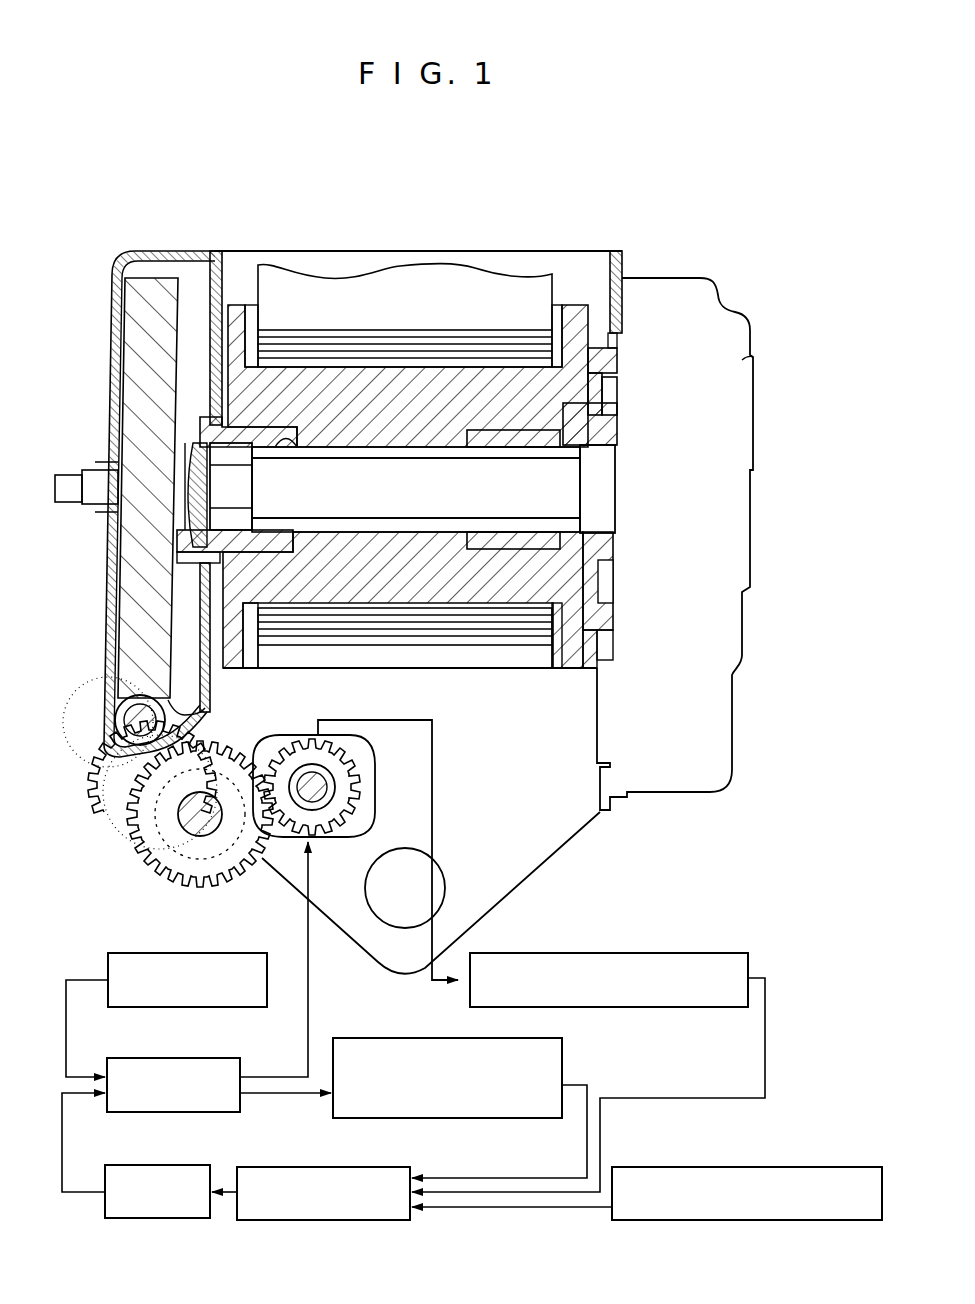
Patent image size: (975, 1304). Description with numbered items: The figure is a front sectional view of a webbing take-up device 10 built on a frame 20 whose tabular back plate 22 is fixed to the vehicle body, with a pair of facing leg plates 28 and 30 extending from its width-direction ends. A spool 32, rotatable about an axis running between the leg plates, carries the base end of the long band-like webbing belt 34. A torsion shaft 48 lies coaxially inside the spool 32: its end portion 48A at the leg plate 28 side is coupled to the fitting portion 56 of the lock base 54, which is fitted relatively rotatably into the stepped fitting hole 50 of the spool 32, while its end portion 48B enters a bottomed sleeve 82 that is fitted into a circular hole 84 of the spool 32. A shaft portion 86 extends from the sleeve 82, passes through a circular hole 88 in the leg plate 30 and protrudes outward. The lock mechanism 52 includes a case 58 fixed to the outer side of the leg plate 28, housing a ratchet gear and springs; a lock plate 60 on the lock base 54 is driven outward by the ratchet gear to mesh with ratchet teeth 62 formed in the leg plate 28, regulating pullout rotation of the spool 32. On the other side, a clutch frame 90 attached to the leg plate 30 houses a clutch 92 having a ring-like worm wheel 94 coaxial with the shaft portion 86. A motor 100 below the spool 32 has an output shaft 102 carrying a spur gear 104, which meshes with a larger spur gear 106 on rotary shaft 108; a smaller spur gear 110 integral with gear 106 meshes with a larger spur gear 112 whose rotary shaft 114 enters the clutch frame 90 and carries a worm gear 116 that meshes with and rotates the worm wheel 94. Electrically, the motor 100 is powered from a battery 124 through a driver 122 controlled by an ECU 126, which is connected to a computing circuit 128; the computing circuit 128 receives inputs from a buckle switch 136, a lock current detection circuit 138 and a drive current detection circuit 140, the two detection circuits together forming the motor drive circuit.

The webbing take-up device 10 is at (545, 244).
The frame 20 is at (576, 838).
The back plate 22 is at (525, 868).
The leg plate 28 is at (622, 262).
The leg plate 30 is at (224, 258).
The spool 32 is at (440, 660).
The webbing belt 34 is at (398, 282).
The torsion shaft 48 is at (378, 506).
The end portion of the torsion shaft 48A is at (612, 485).
The end portion of the torsion shaft 48B is at (248, 490).
The fitting hole 50 is at (500, 432).
The lock mechanism 52 is at (736, 303).
The lock base 54 is at (620, 420).
The fitting portion 56 is at (472, 545).
The case 58 is at (745, 358).
The lock plate 60 is at (625, 402).
The ratchet teeth 62 is at (622, 365).
The sleeve 82 is at (262, 430).
The circular hole 84 is at (325, 440).
The shaft portion 86 is at (98, 462).
The circular hole 88 is at (238, 548).
The clutch frame 90 is at (155, 254).
The clutch 92 is at (126, 266).
The worm wheel 94 is at (132, 350).
The motor 100 is at (293, 735).
The output shaft 102 is at (350, 785).
The spur gear 104 is at (360, 800).
The spur gear 106 is at (162, 870).
The rotary shaft 108 is at (185, 888).
The spur gear 110 is at (180, 828).
The spur gear 112 is at (100, 793).
The rotary shaft 114 is at (118, 744).
The worm gear 116 is at (125, 720).
The driver 122 is at (230, 1058).
The battery 124 is at (247, 953).
The ECU 126 is at (197, 1165).
The computing circuit 128 is at (337, 1167).
The buckle switch 136 is at (827, 1167).
The lock current detection circuit 138 is at (707, 953).
The drive current detection circuit 140 is at (372, 1038).